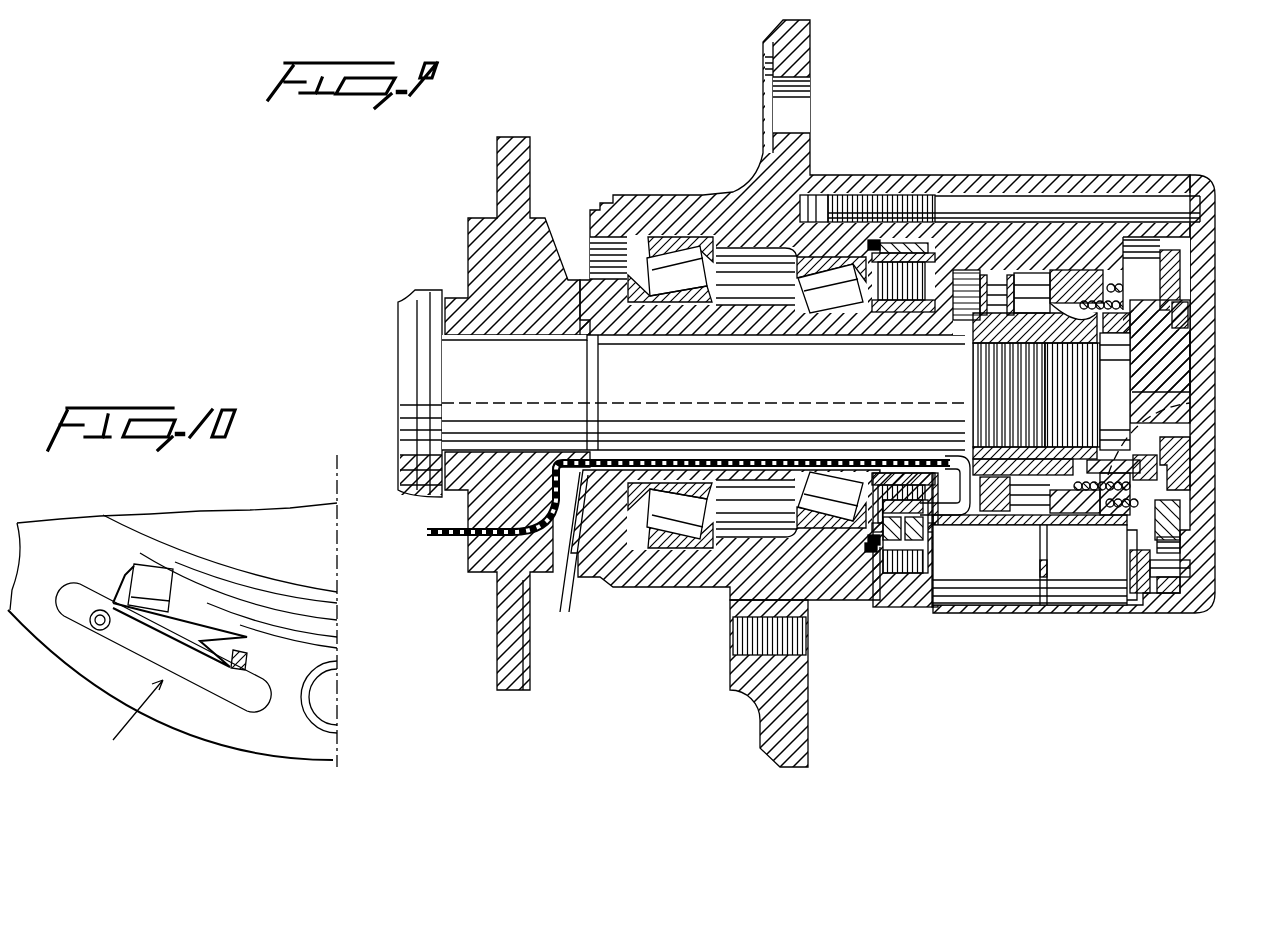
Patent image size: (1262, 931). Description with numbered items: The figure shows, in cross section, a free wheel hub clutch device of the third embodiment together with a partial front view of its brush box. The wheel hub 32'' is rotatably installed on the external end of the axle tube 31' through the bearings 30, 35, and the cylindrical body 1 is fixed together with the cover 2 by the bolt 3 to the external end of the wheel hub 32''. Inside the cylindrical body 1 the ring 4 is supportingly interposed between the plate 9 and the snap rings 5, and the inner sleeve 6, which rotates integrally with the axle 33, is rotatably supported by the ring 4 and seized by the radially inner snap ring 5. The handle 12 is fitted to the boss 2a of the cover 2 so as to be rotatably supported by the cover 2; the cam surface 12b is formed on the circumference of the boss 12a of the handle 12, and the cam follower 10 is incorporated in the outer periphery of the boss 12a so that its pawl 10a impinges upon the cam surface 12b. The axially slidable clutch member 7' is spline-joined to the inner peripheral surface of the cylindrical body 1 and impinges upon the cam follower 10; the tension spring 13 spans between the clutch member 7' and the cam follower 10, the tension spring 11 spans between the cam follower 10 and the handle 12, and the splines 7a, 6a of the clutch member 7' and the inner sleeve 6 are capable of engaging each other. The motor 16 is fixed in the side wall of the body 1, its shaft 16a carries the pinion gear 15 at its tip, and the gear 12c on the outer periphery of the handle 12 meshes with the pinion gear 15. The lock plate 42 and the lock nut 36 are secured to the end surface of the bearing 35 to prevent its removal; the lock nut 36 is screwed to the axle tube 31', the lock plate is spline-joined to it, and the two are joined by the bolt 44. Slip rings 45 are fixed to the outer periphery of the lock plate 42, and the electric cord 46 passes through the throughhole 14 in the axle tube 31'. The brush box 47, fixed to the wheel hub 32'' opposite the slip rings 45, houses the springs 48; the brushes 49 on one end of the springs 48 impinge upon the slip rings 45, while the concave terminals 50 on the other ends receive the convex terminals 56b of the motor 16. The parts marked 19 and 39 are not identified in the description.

In FIG. 9, the cylindrical body 1 is at (1137, 177).
In FIG. 9, the cover 2 is at (1175, 375).
In FIG. 9, the boss 2a is at (1160, 362).
In FIG. 9, the bolt 3 is at (1155, 203).
In FIG. 9, the ring 4 is at (1007, 280).
In FIG. 9, the snap rings 5 is at (990, 255).
In FIG. 9, the inner sleeve 6 is at (1068, 230).
In FIG. 9, the spline 6a is at (1030, 480).
In FIG. 9, the spline 7a is at (1068, 490).
In FIG. 9, the clutch member 7' is at (1077, 599).
In FIG. 9, the plate 9 is at (1020, 290).
In FIG. 9, the cam follower 10 is at (1180, 540).
In FIG. 9, the pawl 10a is at (1165, 470).
In FIG. 9, the tension spring 11 is at (1100, 520).
In FIG. 9, the handle 12 is at (1160, 268).
In FIG. 9, the boss 12a is at (1192, 295).
In FIG. 9, the cam surface 12b is at (1183, 410).
In FIG. 9, the gear 12c is at (1205, 223).
In FIG. 9, the tension spring 13 is at (1140, 492).
In FIG. 9, the throughhole 14 is at (560, 590).
In FIG. 9, the pinion gear 15 is at (1187, 613).
In FIG. 9, the motor 16 is at (983, 575).
In FIG. 9, the shaft 16a is at (1190, 568).
In FIG. 10, the disc 19 is at (113, 677).
In FIG. 9, the bearing 30 is at (650, 275).
In FIG. 9, the axle tube 31' is at (485, 413).
In FIG. 9, the wheel hub 32'' is at (794, 393).
In FIG. 9, the axle 33 is at (637, 358).
In FIG. 9, the bearing 35 is at (815, 283).
In FIG. 9, the lock nut 36 is at (876, 240).
In FIG. 9, the housing part 39 is at (717, 607).
In FIG. 9, the lock plate 42 is at (963, 248).
In FIG. 9, the bolt 44 is at (937, 235).
In FIG. 9, the slip rings 45 is at (910, 260).
In FIG. 10, the slip rings 45 is at (227, 593).
In FIG. 9, the electric cord 46 is at (452, 540).
In FIG. 9, the brush box 47 is at (888, 613).
In FIG. 10, the brush box 47 is at (126, 721).
In FIG. 9, the springs 48 is at (858, 600).
In FIG. 10, the springs 48 is at (183, 610).
In FIG. 10, the brushes 49 is at (147, 573).
In FIG. 9, the concave terminals 50 is at (900, 613).
In FIG. 10, the concave terminals 50 is at (95, 627).
In FIG. 9, the convex terminals 56b is at (925, 613).